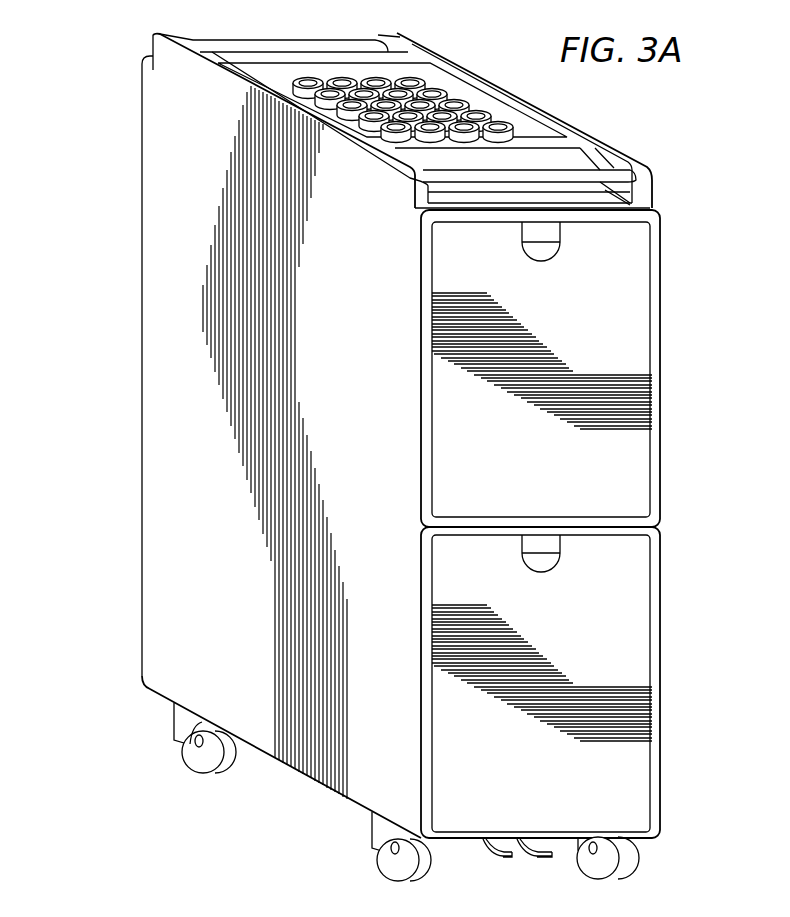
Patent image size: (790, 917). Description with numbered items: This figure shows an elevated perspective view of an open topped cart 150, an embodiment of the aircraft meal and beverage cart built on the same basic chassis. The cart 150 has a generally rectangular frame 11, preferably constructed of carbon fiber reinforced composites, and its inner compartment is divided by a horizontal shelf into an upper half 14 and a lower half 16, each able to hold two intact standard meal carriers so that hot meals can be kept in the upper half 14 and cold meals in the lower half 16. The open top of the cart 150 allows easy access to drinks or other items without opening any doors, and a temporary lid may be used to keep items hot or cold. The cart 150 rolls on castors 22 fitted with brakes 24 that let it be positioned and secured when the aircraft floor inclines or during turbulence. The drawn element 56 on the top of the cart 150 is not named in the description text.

The storage cabinet assembly 150 is at (101, 421).
The side wall 11 is at (163, 602).
The upper front panel 14 is at (623, 478).
The lower front panel 16 is at (633, 612).
The caster wheel 22 is at (208, 773).
The support foot 24 is at (512, 860).
The cylindrical connectors 56 is at (505, 130).